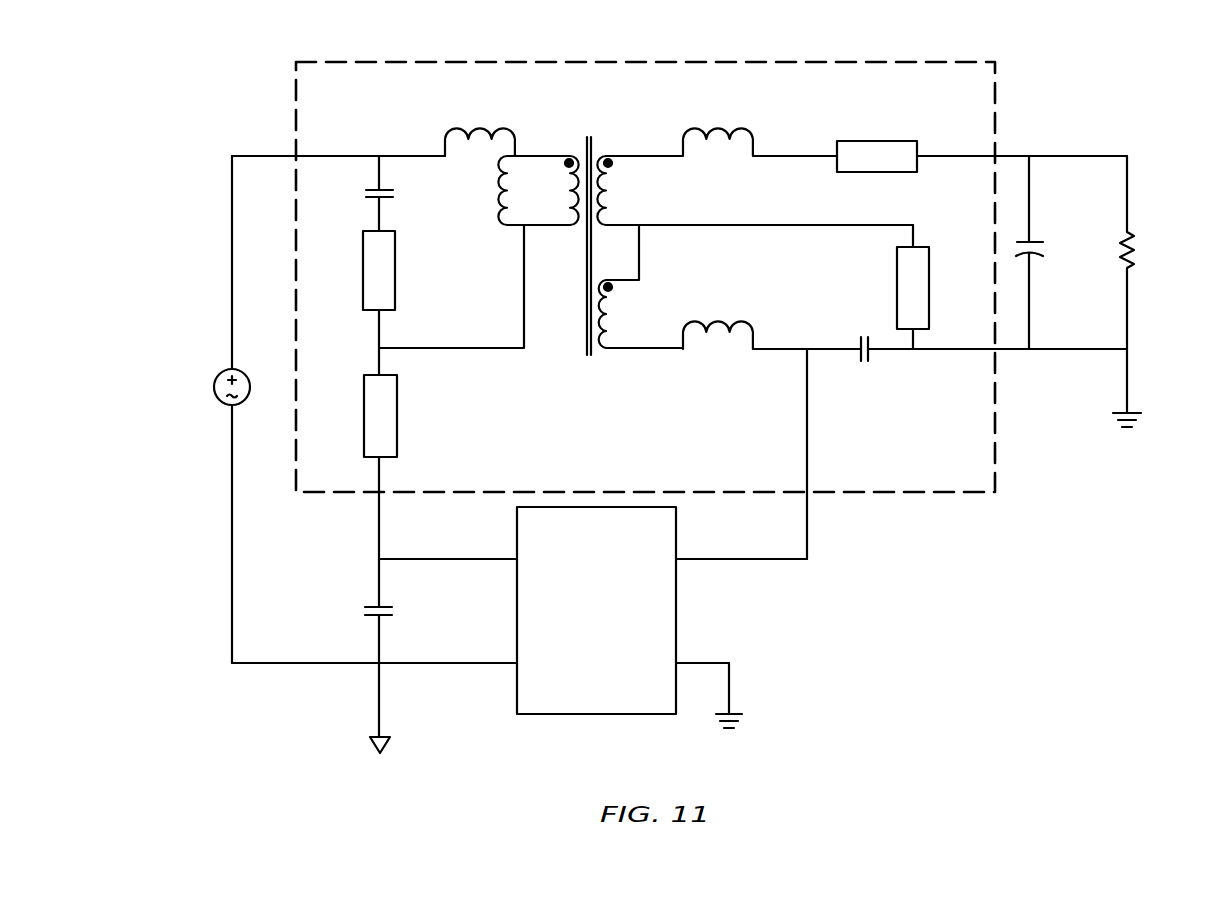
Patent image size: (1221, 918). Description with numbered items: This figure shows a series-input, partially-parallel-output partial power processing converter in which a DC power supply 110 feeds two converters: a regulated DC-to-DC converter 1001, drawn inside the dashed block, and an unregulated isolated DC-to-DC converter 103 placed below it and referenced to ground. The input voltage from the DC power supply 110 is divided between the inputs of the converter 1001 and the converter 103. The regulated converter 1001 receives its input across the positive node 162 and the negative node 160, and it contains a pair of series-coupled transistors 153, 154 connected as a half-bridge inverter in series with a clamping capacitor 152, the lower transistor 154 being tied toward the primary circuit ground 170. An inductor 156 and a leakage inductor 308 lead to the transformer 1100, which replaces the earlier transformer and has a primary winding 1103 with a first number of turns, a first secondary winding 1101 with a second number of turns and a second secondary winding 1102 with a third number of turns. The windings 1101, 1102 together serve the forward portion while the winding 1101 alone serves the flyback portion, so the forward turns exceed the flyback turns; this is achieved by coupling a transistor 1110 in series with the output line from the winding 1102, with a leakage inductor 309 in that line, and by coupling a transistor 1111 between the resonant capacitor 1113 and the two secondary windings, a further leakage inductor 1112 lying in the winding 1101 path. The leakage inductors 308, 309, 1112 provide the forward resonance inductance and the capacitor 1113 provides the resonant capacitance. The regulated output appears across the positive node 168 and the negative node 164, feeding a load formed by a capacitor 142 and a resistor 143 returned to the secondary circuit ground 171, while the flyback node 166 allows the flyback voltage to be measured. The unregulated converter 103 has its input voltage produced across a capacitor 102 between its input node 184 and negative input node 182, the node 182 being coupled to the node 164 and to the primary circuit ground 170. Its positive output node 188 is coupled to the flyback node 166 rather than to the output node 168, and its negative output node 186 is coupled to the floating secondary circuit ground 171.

The regulated DC-to-DC converter 1001 is at (997, 70).
The DC power supply 110 is at (224, 371).
The positive node 162 is at (312, 156).
The clamping capacitor 152 is at (393, 193).
The transistor 153 is at (396, 296).
The transistor 154 is at (397, 432).
The negative node 160 is at (381, 472).
The leakage inductor 308 is at (458, 129).
The inductor 156 is at (500, 178).
The transformer 1100 is at (585, 304).
The first secondary winding 1101 is at (596, 357).
The second secondary winding 1102 is at (603, 152).
The primary winding 1103 is at (569, 158).
The leakage inductor 309 is at (727, 130).
The transistor 1110 is at (838, 141).
The positive node 168 is at (956, 153).
The transistor 1111 is at (933, 248).
The leakage inductor 1112 is at (710, 324).
The capacitor 1113 is at (860, 337).
The flyback node 166 is at (817, 352).
The negative node 164 is at (973, 352).
The capacitor 142 is at (1043, 243).
The resistor 143 is at (1133, 234).
The secondary circuit ground 171 is at (1142, 413).
The isolated DC-to-DC converter 103 is at (680, 627).
The input node 184 is at (467, 559).
The positive output node 188 is at (680, 559).
The negative input node 182 is at (467, 663).
The negative output node 186 is at (680, 663).
The capacitor 102 is at (392, 614).
The primary circuit ground 170 is at (388, 740).